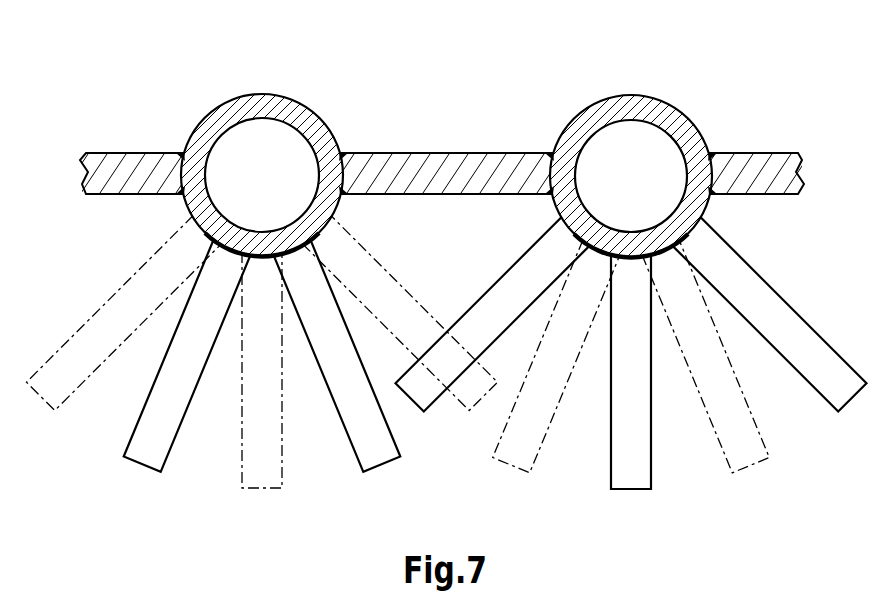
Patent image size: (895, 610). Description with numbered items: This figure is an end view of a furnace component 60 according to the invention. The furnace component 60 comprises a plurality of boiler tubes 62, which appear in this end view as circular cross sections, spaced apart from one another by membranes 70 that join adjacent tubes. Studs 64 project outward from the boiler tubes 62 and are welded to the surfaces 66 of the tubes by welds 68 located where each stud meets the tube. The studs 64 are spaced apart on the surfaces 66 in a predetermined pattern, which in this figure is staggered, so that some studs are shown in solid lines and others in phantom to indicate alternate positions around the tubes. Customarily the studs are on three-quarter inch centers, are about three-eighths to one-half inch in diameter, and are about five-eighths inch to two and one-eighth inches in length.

The furnace component 60 is at (447, 256).
The boiler tubes 62 is at (200, 133).
The studs 64 is at (162, 402).
The surfaces 66 is at (680, 110).
The welds 68 is at (703, 217).
The membranes 70 is at (462, 153).